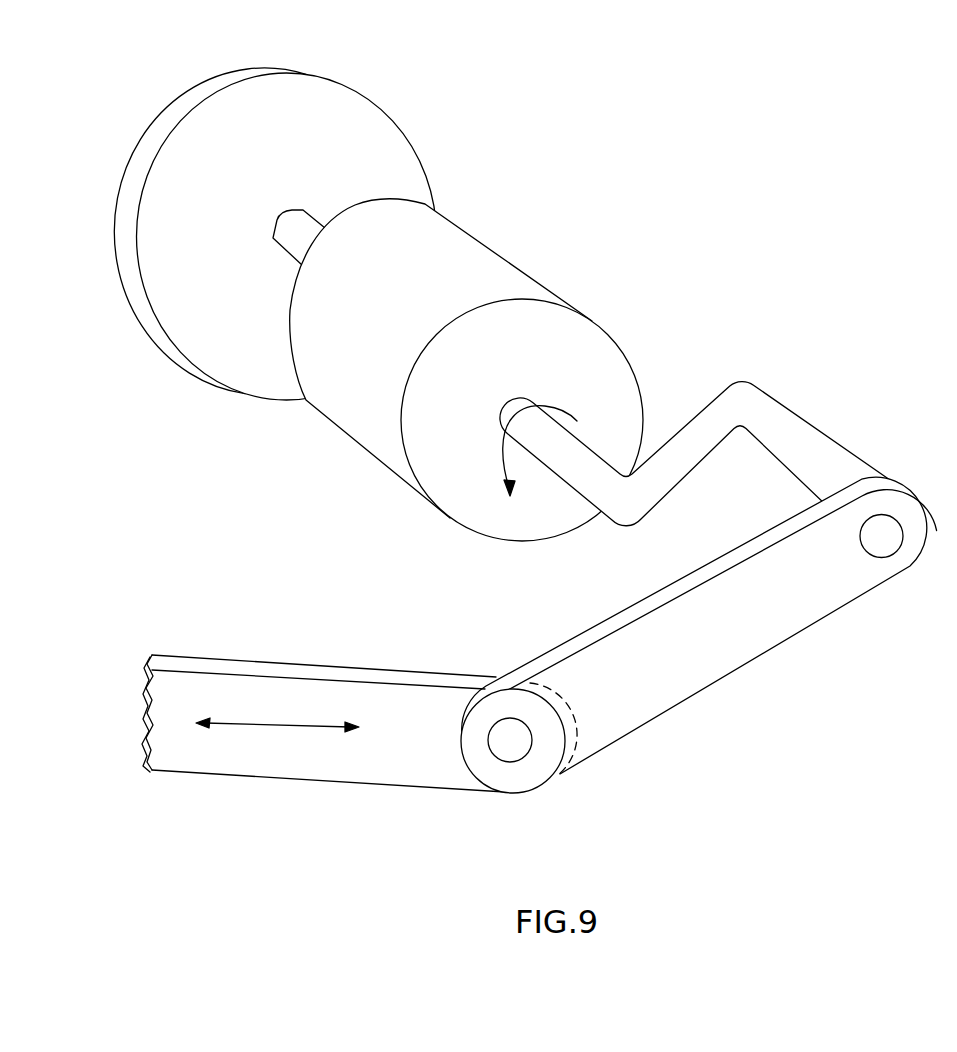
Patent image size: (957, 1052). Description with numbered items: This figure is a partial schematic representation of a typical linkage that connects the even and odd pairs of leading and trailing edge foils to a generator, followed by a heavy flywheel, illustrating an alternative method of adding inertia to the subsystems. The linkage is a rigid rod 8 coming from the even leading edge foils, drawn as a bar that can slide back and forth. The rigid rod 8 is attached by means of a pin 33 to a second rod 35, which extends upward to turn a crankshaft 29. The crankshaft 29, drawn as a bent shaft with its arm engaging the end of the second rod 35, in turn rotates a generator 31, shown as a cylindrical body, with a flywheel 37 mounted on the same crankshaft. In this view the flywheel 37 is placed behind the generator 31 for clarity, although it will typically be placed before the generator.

The flywheel 37 is at (287, 137).
The generator 31 is at (459, 231).
The crankshaft 29 is at (782, 425).
The second rod 35 is at (740, 643).
The pin 33 is at (510, 734).
The rigid rod 8 is at (232, 767).